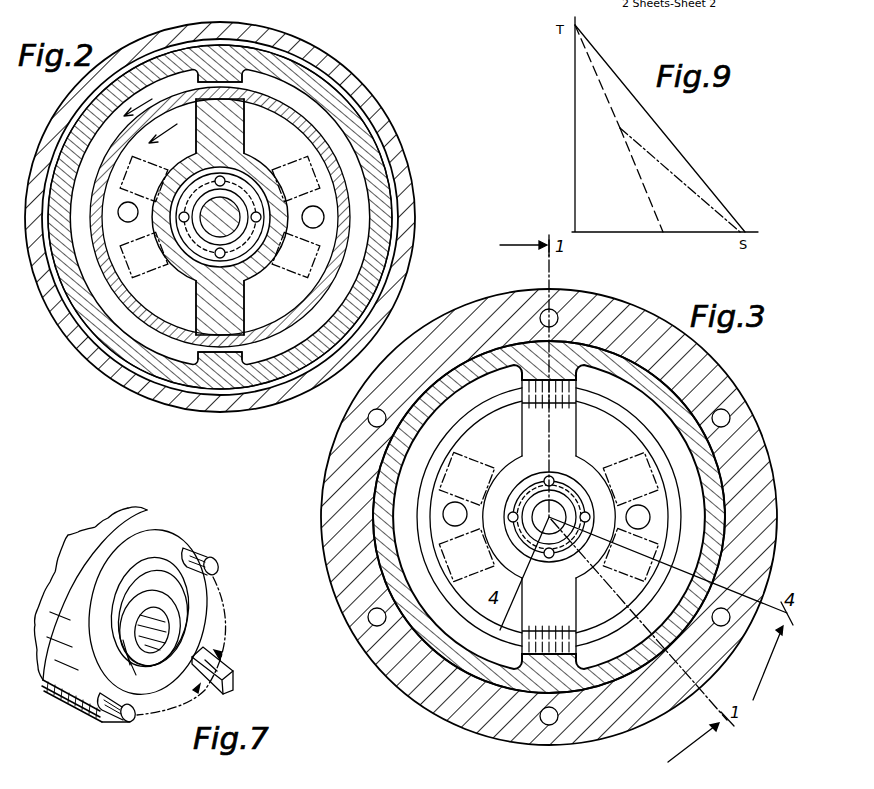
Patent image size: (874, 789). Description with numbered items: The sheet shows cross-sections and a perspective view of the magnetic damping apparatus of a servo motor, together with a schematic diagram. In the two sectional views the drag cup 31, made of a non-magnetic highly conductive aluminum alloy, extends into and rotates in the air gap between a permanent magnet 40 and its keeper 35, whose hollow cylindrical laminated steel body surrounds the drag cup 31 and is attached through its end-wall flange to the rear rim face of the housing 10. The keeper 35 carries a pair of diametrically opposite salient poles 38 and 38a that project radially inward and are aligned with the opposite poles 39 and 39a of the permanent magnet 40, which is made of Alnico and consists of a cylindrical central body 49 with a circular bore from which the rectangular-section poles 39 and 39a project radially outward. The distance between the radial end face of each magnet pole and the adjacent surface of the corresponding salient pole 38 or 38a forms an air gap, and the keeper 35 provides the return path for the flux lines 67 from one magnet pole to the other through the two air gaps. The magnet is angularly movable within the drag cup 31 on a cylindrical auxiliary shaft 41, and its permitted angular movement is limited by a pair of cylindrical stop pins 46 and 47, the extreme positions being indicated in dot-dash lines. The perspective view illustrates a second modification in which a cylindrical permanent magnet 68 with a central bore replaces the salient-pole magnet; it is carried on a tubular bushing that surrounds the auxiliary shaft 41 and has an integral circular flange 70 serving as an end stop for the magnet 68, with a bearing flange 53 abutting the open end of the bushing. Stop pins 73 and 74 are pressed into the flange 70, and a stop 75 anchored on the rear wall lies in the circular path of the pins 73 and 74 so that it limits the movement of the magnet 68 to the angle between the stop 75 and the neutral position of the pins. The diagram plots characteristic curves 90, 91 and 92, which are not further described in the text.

In FIG. 2, the housing 10 is at (68, 337).
In FIG. 3, the housing 10 is at (590, 742).
In FIG. 2, the drag cup 31 is at (284, 322).
In FIG. 3, the drag cup 31 is at (470, 427).
In FIG. 2, the keeper 35 is at (114, 340).
In FIG. 3, the keeper 35 is at (700, 452).
In FIG. 2, the salient pole 38 is at (236, 364).
In FIG. 3, the salient pole 38 is at (566, 658).
In FIG. 2, the salient pole 38a is at (243, 79).
In FIG. 3, the salient pole 38a is at (577, 385).
In FIG. 2, the pole of permanent magnet 39 is at (236, 296).
In FIG. 3, the pole of permanent magnet 39 is at (566, 603).
In FIG. 2, the pole of permanent magnet 39a is at (232, 135).
In FIG. 3, the pole of permanent magnet 39a is at (576, 438).
In FIG. 2, the permanent magnet 40 is at (162, 245).
In FIG. 3, the permanent magnet 40 is at (517, 610).
In FIG. 2, the stop pin 46 is at (130, 202).
In FIG. 3, the stop pin 46 is at (463, 497).
In FIG. 2, the stop pin 47 is at (316, 230).
In FIG. 3, the stop pin 47 is at (640, 505).
In FIG. 2, the central body 49 is at (280, 200).
In FIG. 3, the flux lines 67 is at (524, 395).
In FIG. 9, the torque-speed curve 90 is at (673, 141).
In FIG. 9, the torque-speed curve 91 is at (606, 90).
In FIG. 9, the torque-speed curve 92 is at (640, 176).
In FIG. 7, the auxiliary shaft 41 is at (144, 700).
In FIG. 7, the flange of ball bearing 53 is at (170, 577).
In FIG. 7, the cylindrical permanent magnet 68 is at (128, 510).
In FIG. 7, the circular flange 70 is at (88, 698).
In FIG. 7, the stop pin 73 is at (110, 720).
In FIG. 7, the stop pin 74 is at (217, 551).
In FIG. 7, the stop 75 is at (233, 667).